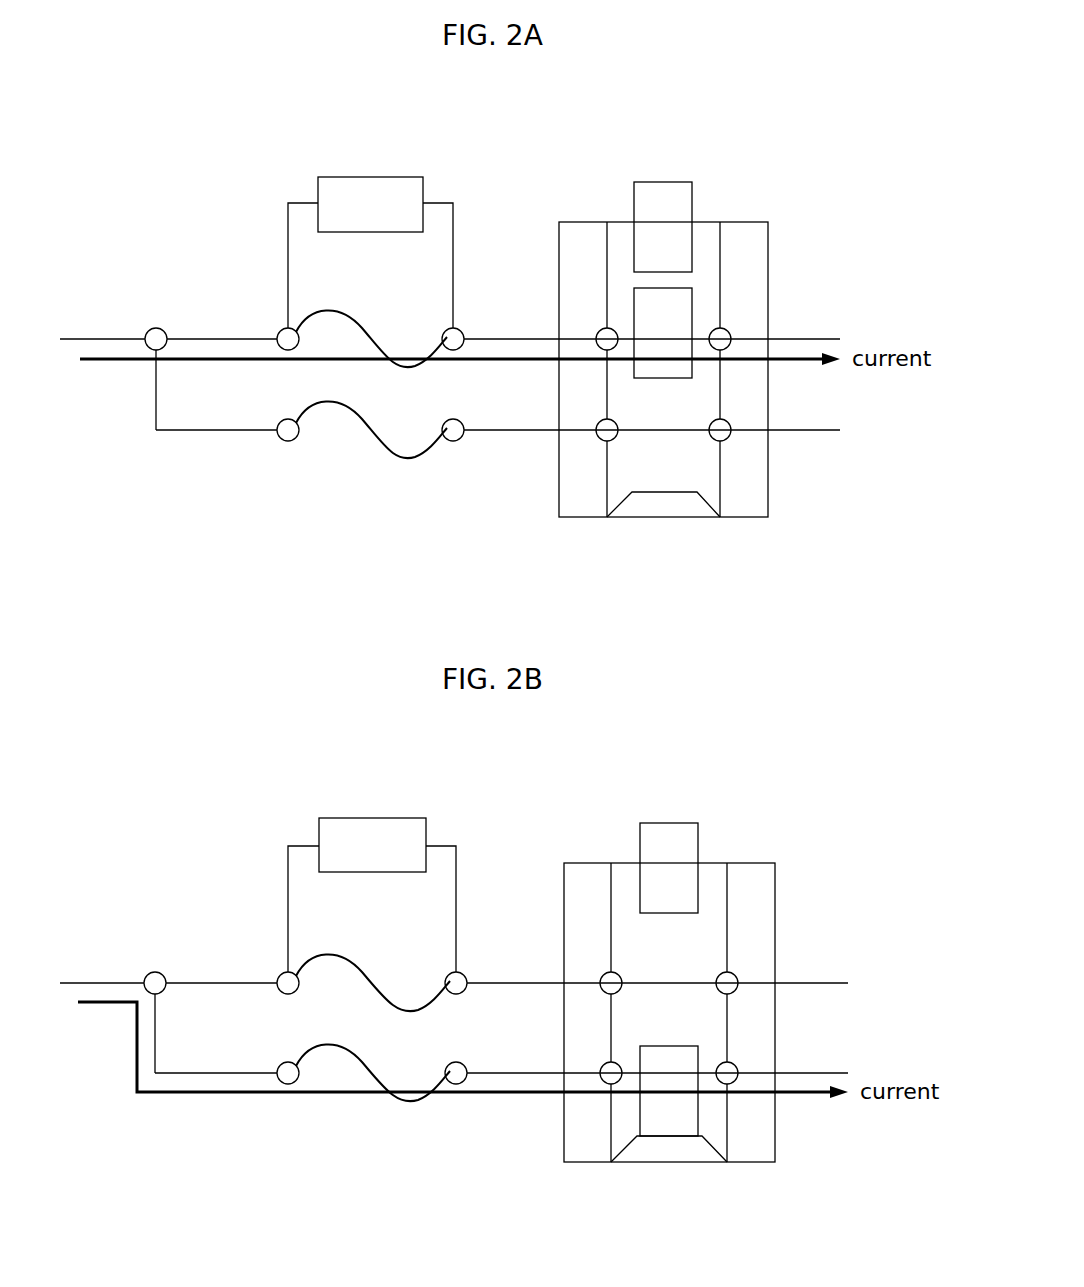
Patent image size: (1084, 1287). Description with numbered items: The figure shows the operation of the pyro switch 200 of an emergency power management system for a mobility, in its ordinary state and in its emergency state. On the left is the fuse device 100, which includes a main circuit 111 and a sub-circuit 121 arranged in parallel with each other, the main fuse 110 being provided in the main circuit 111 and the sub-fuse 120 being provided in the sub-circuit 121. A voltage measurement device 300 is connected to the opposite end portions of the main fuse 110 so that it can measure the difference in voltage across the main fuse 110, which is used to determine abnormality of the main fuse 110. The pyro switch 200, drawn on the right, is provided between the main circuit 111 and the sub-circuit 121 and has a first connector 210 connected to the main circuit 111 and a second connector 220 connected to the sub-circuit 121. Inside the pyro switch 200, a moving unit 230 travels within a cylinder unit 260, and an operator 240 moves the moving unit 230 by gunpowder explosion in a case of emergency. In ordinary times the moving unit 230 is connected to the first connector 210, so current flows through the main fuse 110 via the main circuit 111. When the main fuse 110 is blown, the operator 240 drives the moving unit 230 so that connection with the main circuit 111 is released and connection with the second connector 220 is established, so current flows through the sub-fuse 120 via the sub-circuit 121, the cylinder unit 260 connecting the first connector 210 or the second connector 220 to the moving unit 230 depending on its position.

In FIG. 2A, the fuse device 100 is at (152, 438).
In FIG. 2B, the fuse device 100 is at (150, 1082).
In FIG. 2A, the main fuse 110 is at (333, 310).
In FIG. 2B, the main fuse 110 is at (333, 953).
In FIG. 2A, the main circuit 111 is at (202, 338).
In FIG. 2B, the main circuit 111 is at (202, 982).
In FIG. 2A, the sub-fuse 120 is at (365, 445).
In FIG. 2B, the sub-fuse 120 is at (360, 1102).
In FIG. 2A, the sub-circuit 121 is at (232, 431).
In FIG. 2B, the sub-circuit 121 is at (233, 1075).
In FIG. 2A, the pyro switch 200 is at (772, 218).
In FIG. 2B, the pyro switch 200 is at (779, 860).
In FIG. 2A, the first connector 210 is at (500, 338).
In FIG. 2B, the first connector 210 is at (505, 982).
In FIG. 2A, the second connector 220 is at (500, 432).
In FIG. 2B, the second connector 220 is at (500, 1076).
In FIG. 2A, the moving unit 230 is at (688, 306).
In FIG. 2B, the moving unit 230 is at (688, 1114).
In FIG. 2A, the operator 240 is at (675, 190).
In FIG. 2B, the operator 240 is at (680, 830).
In FIG. 2A, the cylinder unit 260 is at (687, 460).
In FIG. 2B, the cylinder unit 260 is at (680, 953).
In FIG. 2A, the voltage measurement device 300 is at (370, 252).
In FIG. 2B, the voltage measurement device 300 is at (372, 895).